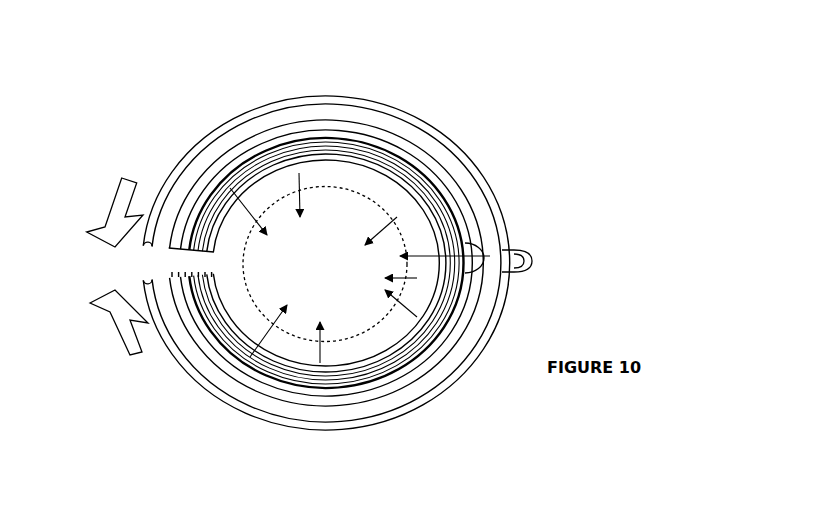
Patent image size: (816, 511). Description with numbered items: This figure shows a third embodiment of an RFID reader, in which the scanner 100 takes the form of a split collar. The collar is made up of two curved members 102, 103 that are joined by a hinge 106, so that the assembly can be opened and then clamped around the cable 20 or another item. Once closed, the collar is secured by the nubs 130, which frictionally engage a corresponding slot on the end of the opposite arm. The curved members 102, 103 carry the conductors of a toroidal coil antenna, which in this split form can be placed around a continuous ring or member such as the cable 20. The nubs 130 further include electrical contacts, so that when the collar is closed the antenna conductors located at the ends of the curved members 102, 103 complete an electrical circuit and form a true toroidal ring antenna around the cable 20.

The scanner 100 is at (603, 167).
The curved member 102 is at (440, 132).
The curved member 103 is at (407, 407).
The hinge 106 is at (533, 254).
The nubs 130 is at (205, 272).
The cable 20 is at (331, 271).